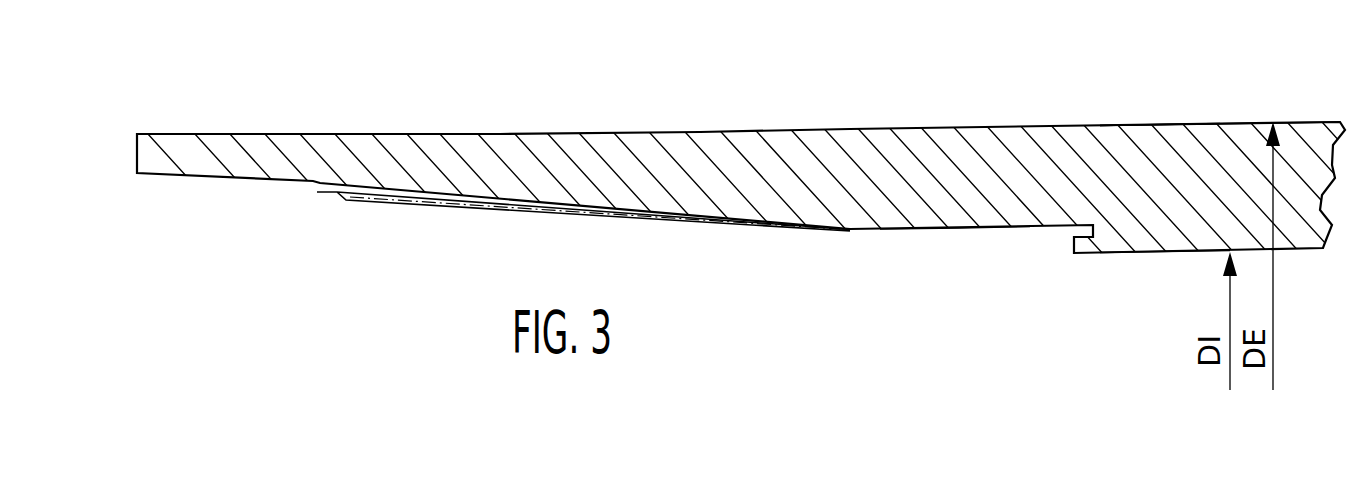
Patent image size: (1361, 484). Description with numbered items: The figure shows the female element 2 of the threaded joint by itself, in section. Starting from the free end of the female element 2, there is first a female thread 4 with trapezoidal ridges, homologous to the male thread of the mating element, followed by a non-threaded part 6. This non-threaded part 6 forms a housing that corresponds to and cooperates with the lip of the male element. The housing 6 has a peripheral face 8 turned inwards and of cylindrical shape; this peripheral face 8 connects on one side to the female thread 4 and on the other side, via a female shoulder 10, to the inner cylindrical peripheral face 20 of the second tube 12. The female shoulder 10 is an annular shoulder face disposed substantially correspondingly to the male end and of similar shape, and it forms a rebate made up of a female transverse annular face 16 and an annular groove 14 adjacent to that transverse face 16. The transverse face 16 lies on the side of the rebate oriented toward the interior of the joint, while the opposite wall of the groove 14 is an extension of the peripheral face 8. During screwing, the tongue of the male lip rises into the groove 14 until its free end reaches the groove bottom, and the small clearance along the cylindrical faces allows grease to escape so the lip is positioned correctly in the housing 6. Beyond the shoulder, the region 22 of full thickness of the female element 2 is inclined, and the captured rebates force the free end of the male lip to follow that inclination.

The female element 2 is at (727, 122).
The female thread 4 is at (474, 214).
The non-threaded part 6 is at (997, 228).
The peripheral face 8 is at (923, 228).
The female shoulder 10 is at (1055, 245).
The second tube 12 is at (1250, 157).
The annular groove 14 is at (1077, 222).
The female transverse annular face 16 is at (1077, 247).
The inner cylindrical peripheral face 20 is at (1158, 255).
The region of full thickness 22 is at (1155, 197).